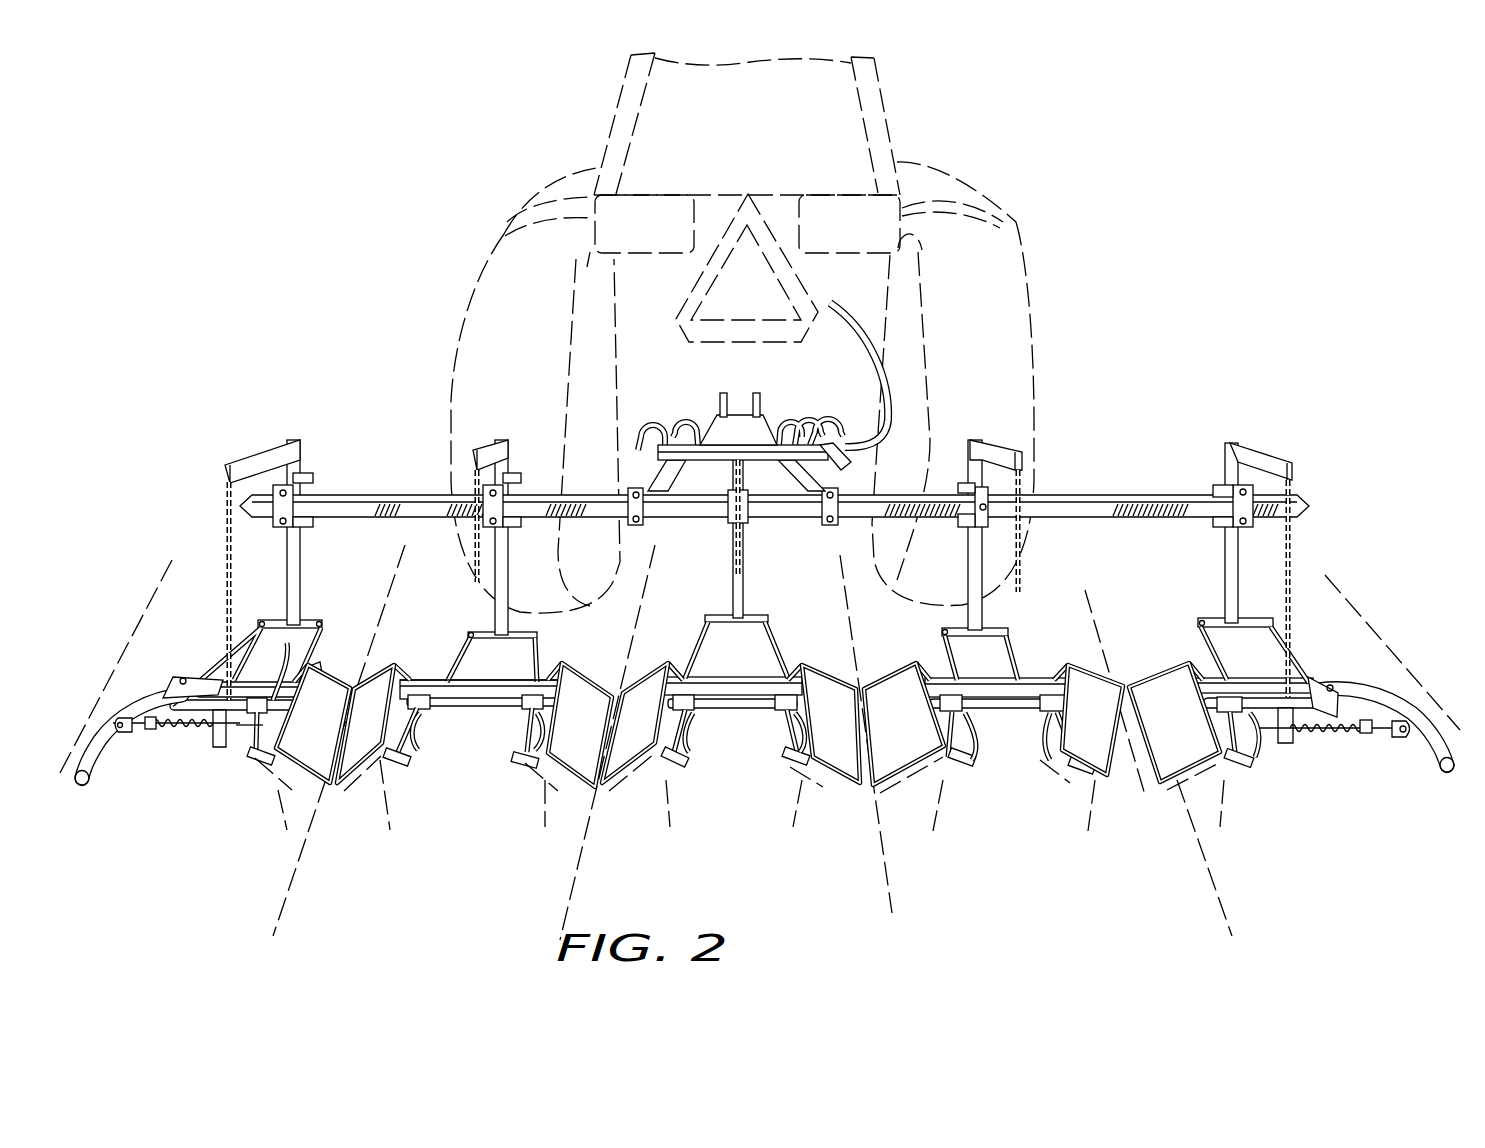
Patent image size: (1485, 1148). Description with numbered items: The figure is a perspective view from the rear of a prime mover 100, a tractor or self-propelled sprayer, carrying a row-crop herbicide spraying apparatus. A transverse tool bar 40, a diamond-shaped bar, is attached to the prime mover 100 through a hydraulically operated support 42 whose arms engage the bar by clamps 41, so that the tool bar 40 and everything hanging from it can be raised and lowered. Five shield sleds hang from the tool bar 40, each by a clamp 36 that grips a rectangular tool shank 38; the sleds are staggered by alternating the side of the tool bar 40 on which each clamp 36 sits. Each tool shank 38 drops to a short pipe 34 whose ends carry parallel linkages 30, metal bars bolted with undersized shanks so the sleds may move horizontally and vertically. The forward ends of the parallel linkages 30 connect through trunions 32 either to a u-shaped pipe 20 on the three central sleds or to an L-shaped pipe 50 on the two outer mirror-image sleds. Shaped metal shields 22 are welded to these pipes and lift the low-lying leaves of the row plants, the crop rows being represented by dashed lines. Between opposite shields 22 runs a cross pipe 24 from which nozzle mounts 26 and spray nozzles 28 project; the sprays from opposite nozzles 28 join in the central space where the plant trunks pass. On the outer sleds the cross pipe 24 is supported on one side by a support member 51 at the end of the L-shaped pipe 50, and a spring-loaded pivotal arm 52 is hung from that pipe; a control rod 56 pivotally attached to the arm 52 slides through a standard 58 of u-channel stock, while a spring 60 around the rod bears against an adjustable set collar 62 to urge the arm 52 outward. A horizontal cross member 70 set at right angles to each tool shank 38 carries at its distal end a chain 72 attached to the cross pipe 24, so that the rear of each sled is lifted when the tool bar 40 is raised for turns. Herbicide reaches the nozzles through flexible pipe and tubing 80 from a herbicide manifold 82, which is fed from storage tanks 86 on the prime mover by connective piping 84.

The prime mover 100 is at (591, 108).
The storage tanks 86 is at (562, 185).
The u-shaped pipe 20 is at (558, 682).
The shaped metal shield 22 is at (306, 730).
The cross pipe 24 is at (216, 695).
The nozzle mounts 26 is at (262, 713).
The spray nozzles 28 is at (262, 766).
The parallel linkage 30 is at (328, 672).
The trunions 32 is at (672, 668).
The short pipe 34 is at (318, 622).
The clamp 36 is at (315, 484).
The tool shank 38 is at (305, 448).
The transverse tool bar 40 is at (1108, 496).
The clamps 41 is at (634, 526).
The hydraulically operated support 42 is at (722, 396).
The L-shaped pipe 50 is at (327, 670).
The support member 51 is at (195, 675).
The spring-loaded pivotal arm 52 is at (138, 690).
The control rod 56 is at (122, 736).
The standard 58 is at (220, 748).
The spring 60 is at (180, 732).
The adjustable set collar 62 is at (150, 731).
The horizontal cross member 70 is at (270, 457).
The chain 72 is at (226, 540).
The flexible pipe and tubing 80 is at (667, 428).
The herbicide manifold 82 is at (728, 465).
The connective piping 84 is at (862, 345).